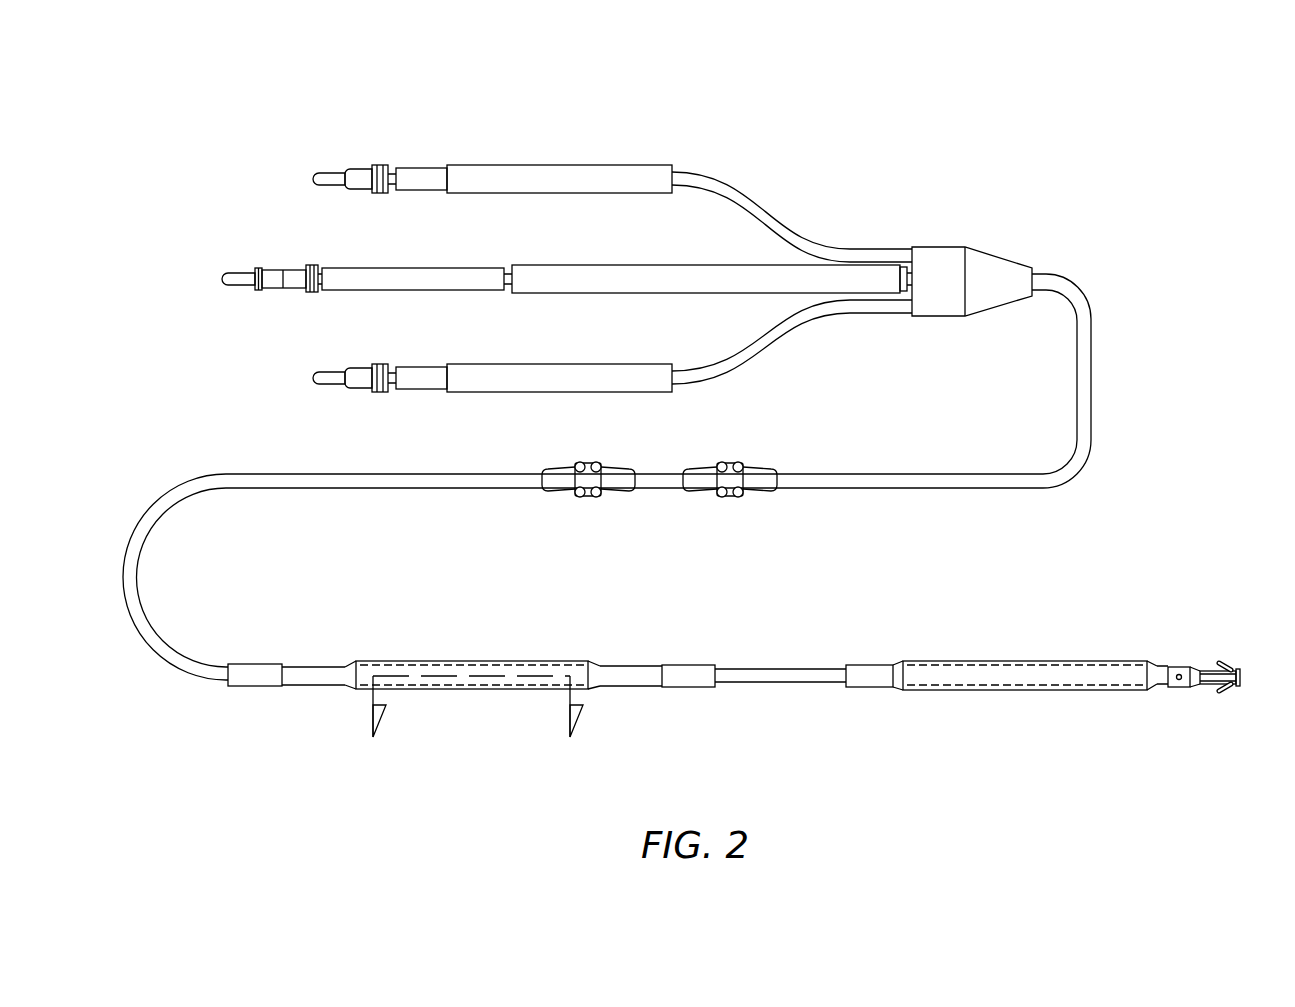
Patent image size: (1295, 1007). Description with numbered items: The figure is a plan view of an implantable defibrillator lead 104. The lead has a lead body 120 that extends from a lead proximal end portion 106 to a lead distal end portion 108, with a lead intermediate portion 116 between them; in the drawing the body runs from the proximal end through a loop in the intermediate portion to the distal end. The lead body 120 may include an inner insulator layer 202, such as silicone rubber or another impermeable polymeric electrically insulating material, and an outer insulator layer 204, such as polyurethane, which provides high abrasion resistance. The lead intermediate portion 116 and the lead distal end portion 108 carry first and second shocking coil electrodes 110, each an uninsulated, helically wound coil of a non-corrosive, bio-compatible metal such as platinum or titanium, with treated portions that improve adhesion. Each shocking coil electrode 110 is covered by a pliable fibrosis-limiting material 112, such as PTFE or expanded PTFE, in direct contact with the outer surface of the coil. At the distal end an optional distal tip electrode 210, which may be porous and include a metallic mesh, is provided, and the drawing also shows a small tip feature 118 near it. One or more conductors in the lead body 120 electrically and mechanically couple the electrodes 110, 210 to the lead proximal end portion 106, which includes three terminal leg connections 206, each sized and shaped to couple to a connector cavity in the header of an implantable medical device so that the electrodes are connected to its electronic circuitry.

The implantable defibrillator lead 104 is at (1174, 124).
The lead proximal end portion 106 is at (998, 257).
The lead distal end portion 108 is at (782, 678).
The shocking coil electrode 110 is at (421, 677).
The fibrosis-limiting material 112 is at (472, 661).
The lead intermediate portion 116 is at (123, 575).
The distal prongs 118 is at (1226, 689).
The lead body 120 is at (906, 490).
The inner insulator layer 202 is at (1086, 387).
The outer insulator layer 204 is at (1074, 476).
The terminal leg connection 206 is at (366, 172).
The distal tip electrode 210 is at (1243, 676).